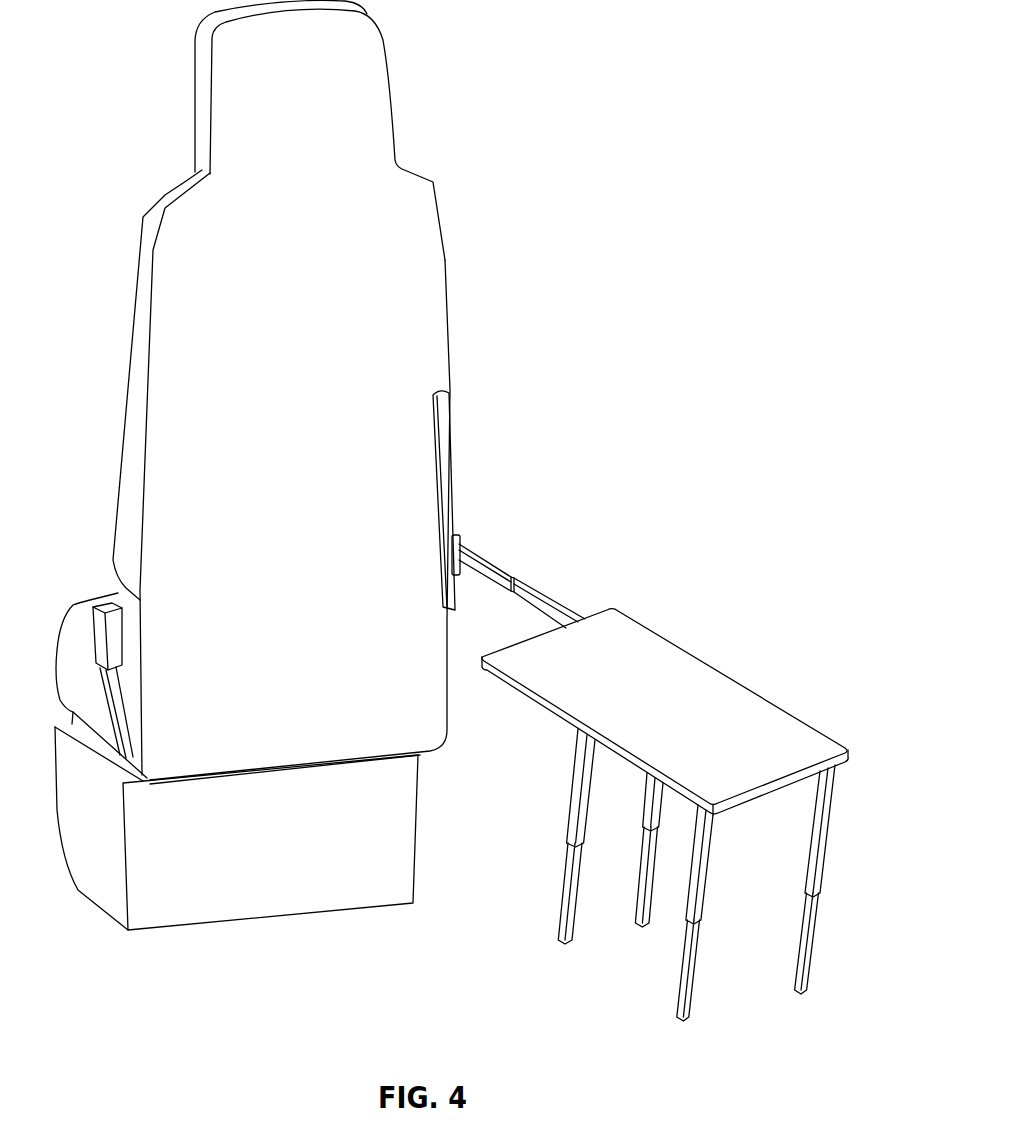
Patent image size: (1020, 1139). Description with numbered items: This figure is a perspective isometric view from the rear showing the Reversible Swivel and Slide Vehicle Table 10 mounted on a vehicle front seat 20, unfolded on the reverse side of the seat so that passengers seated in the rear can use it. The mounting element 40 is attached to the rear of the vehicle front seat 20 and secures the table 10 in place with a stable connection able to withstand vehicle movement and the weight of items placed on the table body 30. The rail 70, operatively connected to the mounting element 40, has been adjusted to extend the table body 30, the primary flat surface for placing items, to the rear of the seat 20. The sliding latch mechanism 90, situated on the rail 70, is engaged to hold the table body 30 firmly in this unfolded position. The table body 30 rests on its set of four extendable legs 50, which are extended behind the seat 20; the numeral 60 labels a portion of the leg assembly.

The Reversible Swivel and Slide Vehicle Table 10 is at (677, 734).
The vehicle front seat 20 is at (200, 65).
The table body 30 is at (755, 733).
The mounting element 40 is at (450, 428).
The extendable legs 50 is at (688, 1006).
The telescoping leg section 60 is at (632, 1008).
The rail 70 is at (548, 600).
The sliding latch mechanism 90 is at (460, 540).